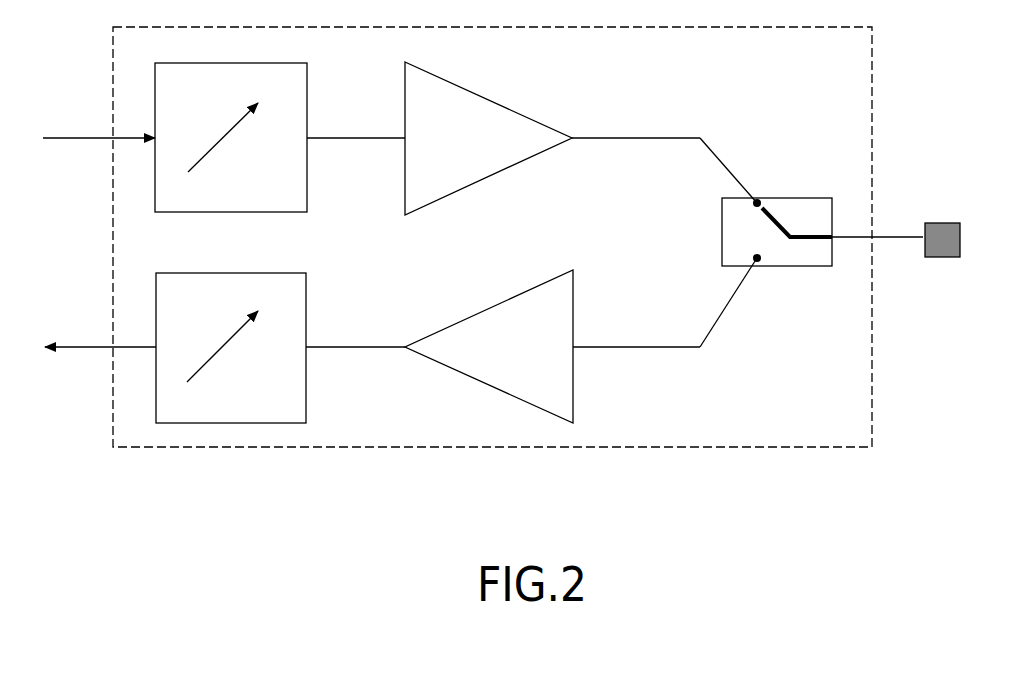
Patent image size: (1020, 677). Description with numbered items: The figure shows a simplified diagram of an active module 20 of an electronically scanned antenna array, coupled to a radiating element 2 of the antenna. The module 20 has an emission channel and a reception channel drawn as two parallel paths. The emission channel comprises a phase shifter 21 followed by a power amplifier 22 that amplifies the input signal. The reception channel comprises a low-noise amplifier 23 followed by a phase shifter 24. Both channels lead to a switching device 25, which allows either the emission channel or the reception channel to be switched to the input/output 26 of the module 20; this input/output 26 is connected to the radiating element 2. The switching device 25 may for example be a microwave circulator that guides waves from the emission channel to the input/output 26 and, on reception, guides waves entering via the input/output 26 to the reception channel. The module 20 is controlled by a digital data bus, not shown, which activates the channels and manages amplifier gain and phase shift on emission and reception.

The active module 20 is at (760, 447).
The phase shifter 21 is at (307, 80).
The power amplifier 22 is at (478, 96).
The low-noise amplifier 23 is at (573, 403).
The phase shifter 24 is at (306, 406).
The switching device 25 is at (781, 198).
The input/output 26 is at (889, 237).
The radiating element 2 is at (940, 258).